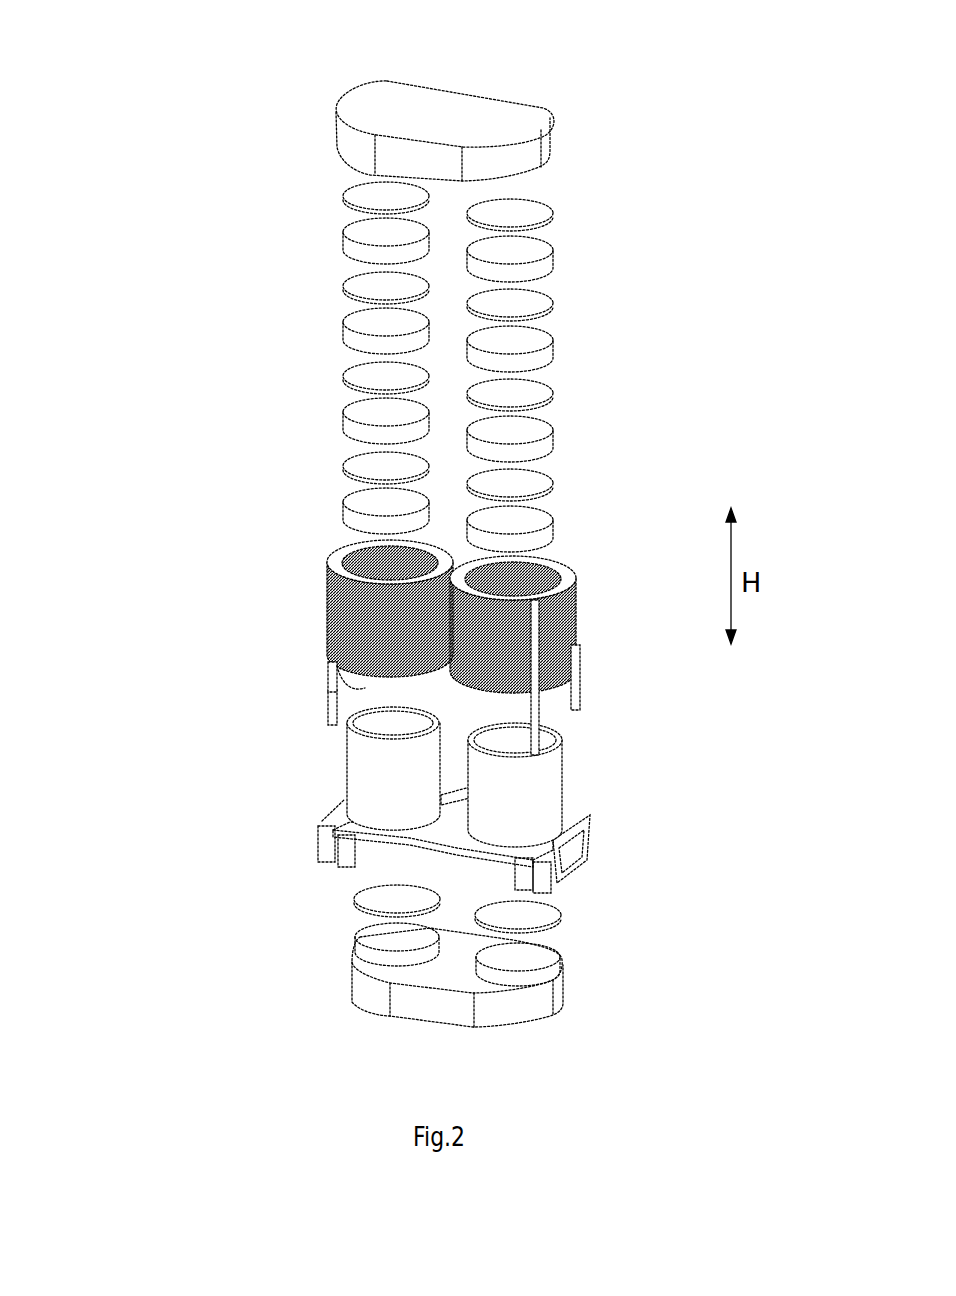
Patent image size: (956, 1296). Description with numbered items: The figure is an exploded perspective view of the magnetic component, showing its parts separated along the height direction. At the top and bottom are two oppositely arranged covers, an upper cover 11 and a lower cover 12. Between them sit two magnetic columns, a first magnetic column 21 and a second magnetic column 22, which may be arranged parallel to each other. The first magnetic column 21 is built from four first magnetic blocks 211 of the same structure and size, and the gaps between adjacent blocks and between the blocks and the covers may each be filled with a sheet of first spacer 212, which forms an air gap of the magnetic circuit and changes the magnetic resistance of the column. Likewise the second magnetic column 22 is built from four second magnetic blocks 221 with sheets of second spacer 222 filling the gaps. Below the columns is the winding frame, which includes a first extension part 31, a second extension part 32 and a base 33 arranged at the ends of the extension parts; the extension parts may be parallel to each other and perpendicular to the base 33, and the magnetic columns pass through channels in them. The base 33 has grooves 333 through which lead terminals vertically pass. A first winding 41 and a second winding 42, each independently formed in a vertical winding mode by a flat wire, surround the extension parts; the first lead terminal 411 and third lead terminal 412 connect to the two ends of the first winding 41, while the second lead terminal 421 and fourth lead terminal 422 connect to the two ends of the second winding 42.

The upper cover 11 is at (427, 100).
The lower cover 12 is at (428, 1005).
The first magnetic column 21 is at (180, 245).
The second magnetic column 22 is at (699, 266).
The first magnetic block 211 is at (345, 226).
The first spacer 212 is at (345, 192).
The second magnetic block 221 is at (551, 244).
The second spacer 222 is at (551, 209).
The first extension part 31 is at (366, 780).
The second extension part 32 is at (556, 784).
The base 33 is at (398, 858).
The groove 333 is at (315, 820).
The first winding 41 is at (328, 612).
The second winding 42 is at (578, 610).
The first lead terminal 411 is at (330, 705).
The third lead terminal 412 is at (333, 672).
The second lead terminal 421 is at (581, 690).
The fourth lead terminal 422 is at (539, 706).